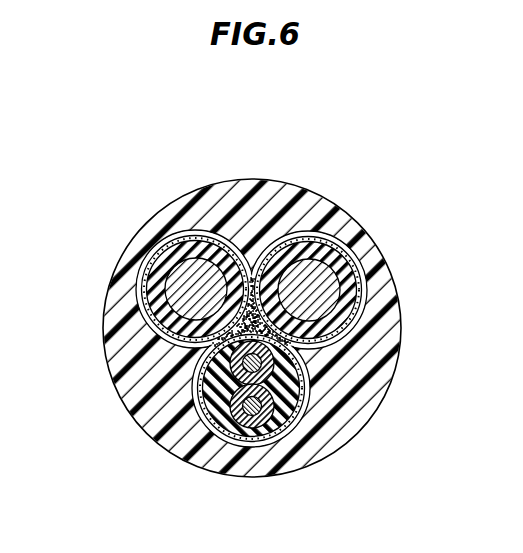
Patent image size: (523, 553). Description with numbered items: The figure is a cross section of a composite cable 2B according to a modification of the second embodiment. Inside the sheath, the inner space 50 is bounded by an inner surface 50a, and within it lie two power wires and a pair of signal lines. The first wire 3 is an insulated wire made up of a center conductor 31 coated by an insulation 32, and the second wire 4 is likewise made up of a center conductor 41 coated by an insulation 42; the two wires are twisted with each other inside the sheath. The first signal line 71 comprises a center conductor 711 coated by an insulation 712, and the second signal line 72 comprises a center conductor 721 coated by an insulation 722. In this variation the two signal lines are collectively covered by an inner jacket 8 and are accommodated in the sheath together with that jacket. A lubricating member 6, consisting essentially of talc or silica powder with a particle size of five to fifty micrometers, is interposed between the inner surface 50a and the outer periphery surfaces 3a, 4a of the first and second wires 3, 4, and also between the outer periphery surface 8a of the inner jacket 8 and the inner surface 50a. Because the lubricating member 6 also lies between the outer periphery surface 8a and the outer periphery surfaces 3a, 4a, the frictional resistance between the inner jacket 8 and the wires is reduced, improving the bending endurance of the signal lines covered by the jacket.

The composite cable 2B is at (146, 166).
The first wire 3 is at (46, 229).
The outer periphery surface of the first wire 3a is at (163, 247).
The center conductor 31 is at (182, 285).
The insulation 32 is at (163, 258).
The second wire 4 is at (459, 239).
The outer periphery surface of the second wire 4a is at (340, 260).
The center conductor 41 is at (322, 298).
The insulation 42 is at (343, 275).
The lubricating member 6 is at (145, 293).
The inner jacket 8 is at (218, 397).
The outer periphery surface of the inner jacket 8a is at (222, 432).
The inner space 50 is at (142, 322).
The inner surface 50a is at (168, 338).
The first signal line 71 is at (465, 366).
The center conductor 711 is at (258, 362).
The insulation 712 is at (270, 353).
The second signal line 72 is at (436, 429).
The center conductor 721 is at (258, 408).
The insulation 722 is at (273, 405).